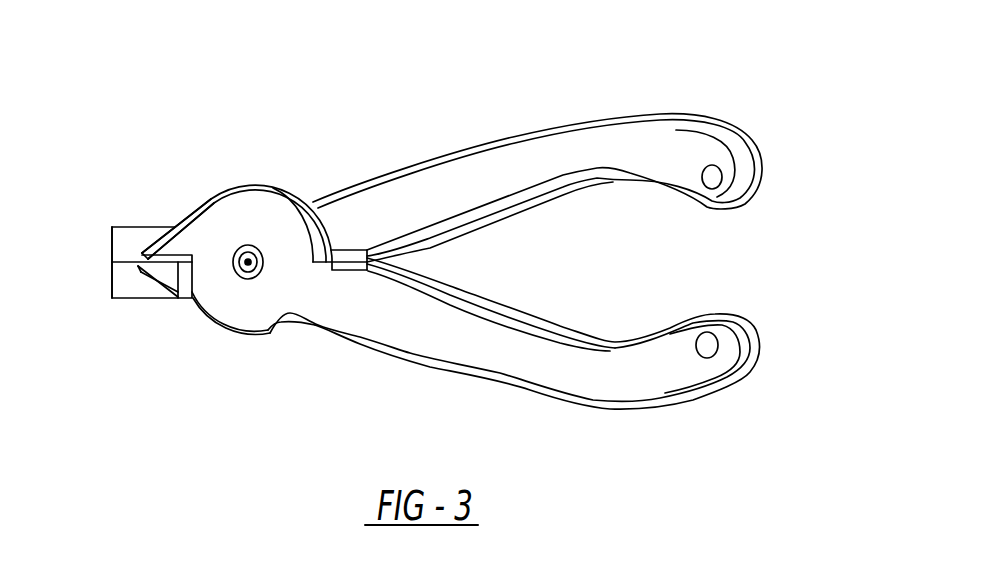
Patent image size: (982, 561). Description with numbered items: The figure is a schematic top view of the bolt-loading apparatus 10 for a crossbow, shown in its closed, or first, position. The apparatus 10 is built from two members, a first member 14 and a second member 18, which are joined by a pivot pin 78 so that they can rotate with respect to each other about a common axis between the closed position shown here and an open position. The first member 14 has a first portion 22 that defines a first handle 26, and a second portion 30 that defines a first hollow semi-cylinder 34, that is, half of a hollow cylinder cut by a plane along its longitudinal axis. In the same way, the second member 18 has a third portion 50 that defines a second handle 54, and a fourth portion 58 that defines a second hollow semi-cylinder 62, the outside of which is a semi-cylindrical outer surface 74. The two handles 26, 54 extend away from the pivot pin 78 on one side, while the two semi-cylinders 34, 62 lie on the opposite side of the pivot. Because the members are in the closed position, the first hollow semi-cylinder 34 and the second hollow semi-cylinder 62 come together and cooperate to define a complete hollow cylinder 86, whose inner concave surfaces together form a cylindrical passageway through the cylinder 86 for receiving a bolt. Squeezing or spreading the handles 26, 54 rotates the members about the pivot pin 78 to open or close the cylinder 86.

The bolt-loading apparatus 10 is at (336, 116).
The first member 14 is at (668, 143).
The second member 18 is at (133, 228).
The first portion 22 is at (514, 157).
The first handle 26 is at (582, 137).
The second portion 30 is at (125, 351).
The first hollow semi-cylinder 34 is at (128, 300).
The third portion 50 is at (513, 353).
The second handle 54 is at (590, 375).
The fourth portion 58 is at (206, 177).
The second hollow semi-cylinder 62 is at (145, 233).
The semi-cylindrical outer surface 74 is at (120, 238).
The pivot pin 78 is at (248, 278).
The complete hollow cylinder 86 is at (90, 268).